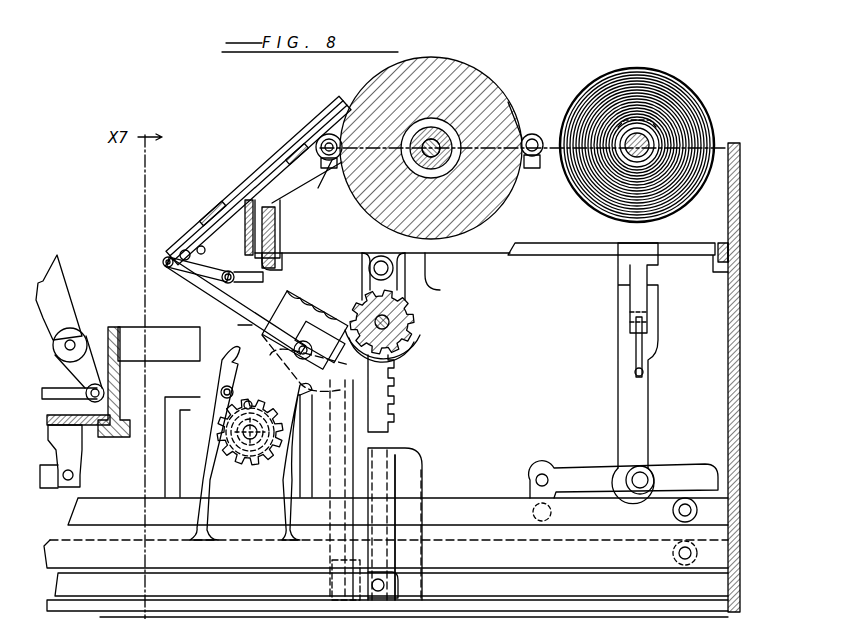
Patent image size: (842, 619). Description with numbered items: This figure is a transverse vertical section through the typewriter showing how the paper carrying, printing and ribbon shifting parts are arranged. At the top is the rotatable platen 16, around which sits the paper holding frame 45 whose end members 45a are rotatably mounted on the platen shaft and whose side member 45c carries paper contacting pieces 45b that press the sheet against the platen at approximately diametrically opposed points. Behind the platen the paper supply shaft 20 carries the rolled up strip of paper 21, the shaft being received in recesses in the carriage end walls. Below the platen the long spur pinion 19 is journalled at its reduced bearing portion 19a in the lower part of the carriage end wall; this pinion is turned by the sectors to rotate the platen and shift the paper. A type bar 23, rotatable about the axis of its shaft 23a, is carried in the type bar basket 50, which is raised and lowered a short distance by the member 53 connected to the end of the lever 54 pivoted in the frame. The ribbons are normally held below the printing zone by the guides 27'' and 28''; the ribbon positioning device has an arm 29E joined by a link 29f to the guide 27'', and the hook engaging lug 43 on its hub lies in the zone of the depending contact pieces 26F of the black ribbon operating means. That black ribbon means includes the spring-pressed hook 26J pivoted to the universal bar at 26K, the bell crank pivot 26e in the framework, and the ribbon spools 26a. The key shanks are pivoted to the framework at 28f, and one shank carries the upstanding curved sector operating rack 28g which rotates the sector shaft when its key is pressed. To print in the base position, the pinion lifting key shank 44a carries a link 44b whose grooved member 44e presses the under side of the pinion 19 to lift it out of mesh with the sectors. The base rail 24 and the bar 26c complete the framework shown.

The platen 16 is at (508, 102).
The long spur pinion 19 is at (410, 313).
The reduced shaft or bearing portion 19a is at (396, 305).
The shaft 20 is at (652, 140).
The rolled up strip or sheet of paper 21 is at (714, 132).
The type bar 23 is at (62, 282).
The type bar shaft 23a is at (76, 329).
The base rail 24 is at (398, 514).
The ribbon spools 26a is at (232, 250).
The link bar 26c is at (265, 277).
The bell crank pivot 26e is at (226, 293).
The contact pieces 26F is at (226, 366).
The spring-pressed hook 26J is at (229, 324).
The hook pivot 26K is at (214, 470).
The ribbon guide 27'' is at (258, 174).
The ribbon guide 28'' is at (271, 205).
The key shank pivot 28f is at (683, 560).
The sector-operating rack 28g is at (215, 452).
The arm 29E is at (262, 318).
The link 29f is at (195, 245).
The hook engaging finger or lug 43 is at (320, 372).
The key shank 44a is at (399, 584).
The link 44b is at (385, 440).
The chaneled or grooved member 44e is at (410, 352).
The frame 45 is at (531, 168).
The end members 45a is at (528, 134).
The paper contacting pieces 45b is at (537, 138).
The side member 45c is at (332, 182).
The type bar basket 50 is at (125, 370).
The member 53 is at (72, 453).
The lever 54 is at (45, 488).